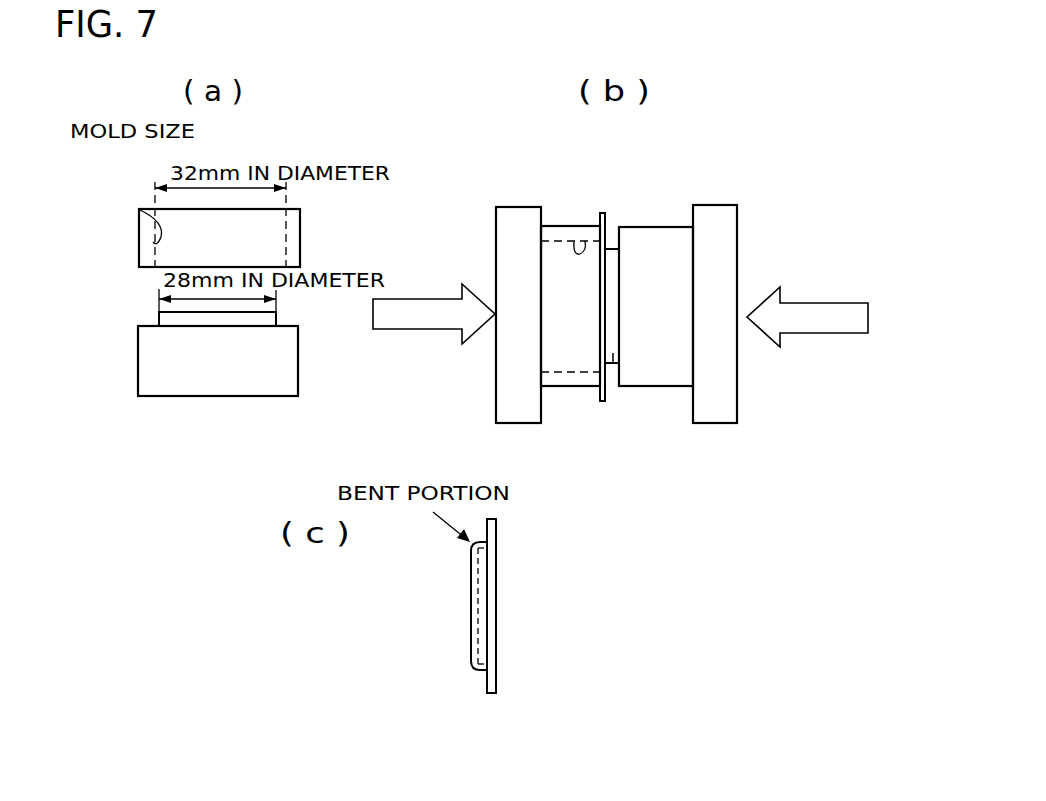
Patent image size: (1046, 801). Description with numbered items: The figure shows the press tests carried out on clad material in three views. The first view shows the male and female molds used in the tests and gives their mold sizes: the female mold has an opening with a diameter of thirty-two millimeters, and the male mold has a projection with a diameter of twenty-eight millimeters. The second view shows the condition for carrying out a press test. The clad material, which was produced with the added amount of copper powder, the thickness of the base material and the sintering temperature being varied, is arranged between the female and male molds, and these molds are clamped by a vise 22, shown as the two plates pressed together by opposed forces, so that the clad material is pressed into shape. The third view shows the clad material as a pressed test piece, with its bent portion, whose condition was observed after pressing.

The vise 22 is at (505, 221).